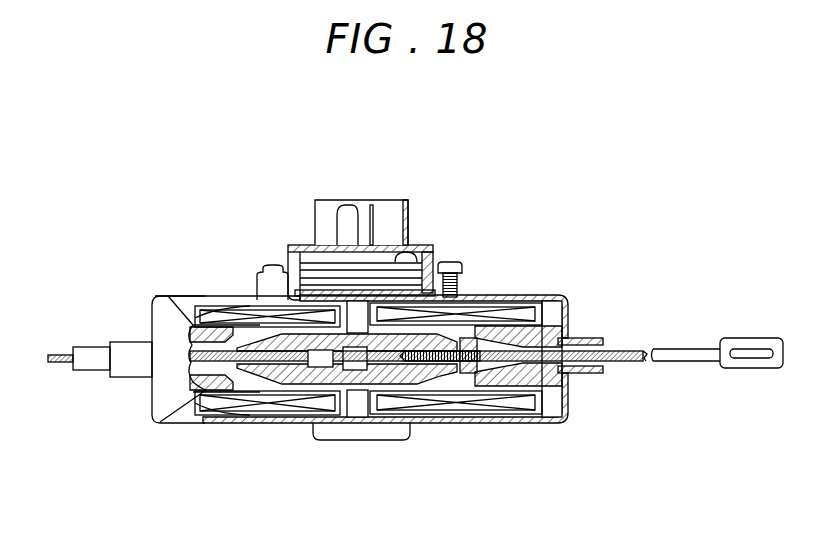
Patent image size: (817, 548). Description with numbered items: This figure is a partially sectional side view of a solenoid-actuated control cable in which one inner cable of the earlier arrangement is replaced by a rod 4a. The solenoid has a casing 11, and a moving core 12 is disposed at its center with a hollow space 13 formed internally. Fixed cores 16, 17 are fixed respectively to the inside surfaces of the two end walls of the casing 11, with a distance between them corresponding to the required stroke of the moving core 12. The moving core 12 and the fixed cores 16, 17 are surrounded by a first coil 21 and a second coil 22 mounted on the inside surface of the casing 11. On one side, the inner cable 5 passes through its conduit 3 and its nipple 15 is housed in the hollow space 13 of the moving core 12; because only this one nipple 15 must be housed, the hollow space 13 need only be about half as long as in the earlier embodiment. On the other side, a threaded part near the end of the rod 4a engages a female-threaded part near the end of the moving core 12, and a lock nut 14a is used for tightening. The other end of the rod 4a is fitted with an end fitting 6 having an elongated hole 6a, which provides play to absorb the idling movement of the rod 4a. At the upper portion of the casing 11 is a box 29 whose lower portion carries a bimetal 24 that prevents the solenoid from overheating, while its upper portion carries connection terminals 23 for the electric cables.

The conduit 3 is at (95, 347).
The inner cable 5 is at (62, 363).
The fixed core 17 is at (163, 296).
The second coil 22 is at (230, 312).
The connection terminals 23 is at (370, 205).
The bimetal 24 is at (407, 242).
The box 29 is at (430, 255).
The first coil 21 is at (503, 312).
The casing 11 is at (562, 293).
The fixed core 16 is at (573, 327).
The elongated hole 6a is at (757, 350).
The end fitting 6 is at (747, 368).
The rod 4a is at (625, 361).
The lock nut 14a is at (467, 373).
The moving core 12 is at (428, 390).
The hollow space 13 is at (357, 370).
The nipple 15 is at (316, 366).